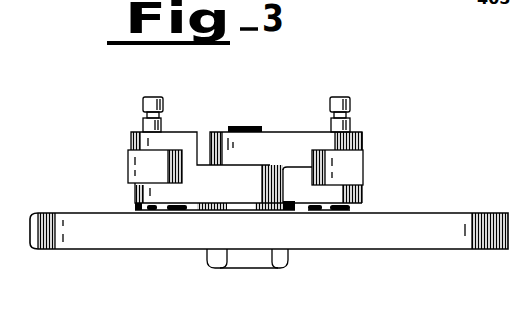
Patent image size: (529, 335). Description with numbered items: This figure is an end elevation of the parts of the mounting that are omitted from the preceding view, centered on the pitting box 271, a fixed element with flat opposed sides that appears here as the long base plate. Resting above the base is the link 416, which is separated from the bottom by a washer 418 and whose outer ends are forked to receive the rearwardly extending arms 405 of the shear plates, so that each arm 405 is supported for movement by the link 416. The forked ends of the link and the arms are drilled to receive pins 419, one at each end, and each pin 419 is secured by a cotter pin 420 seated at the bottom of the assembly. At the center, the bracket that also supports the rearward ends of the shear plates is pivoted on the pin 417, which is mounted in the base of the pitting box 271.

The pitting box 271 is at (433, 251).
The rearwardly extending arm 405 is at (145, 163).
The link 416 is at (287, 145).
The pin 417 is at (246, 127).
The washer 418 is at (284, 212).
The pin 419 is at (142, 99).
The cotter pin 420 is at (137, 205).